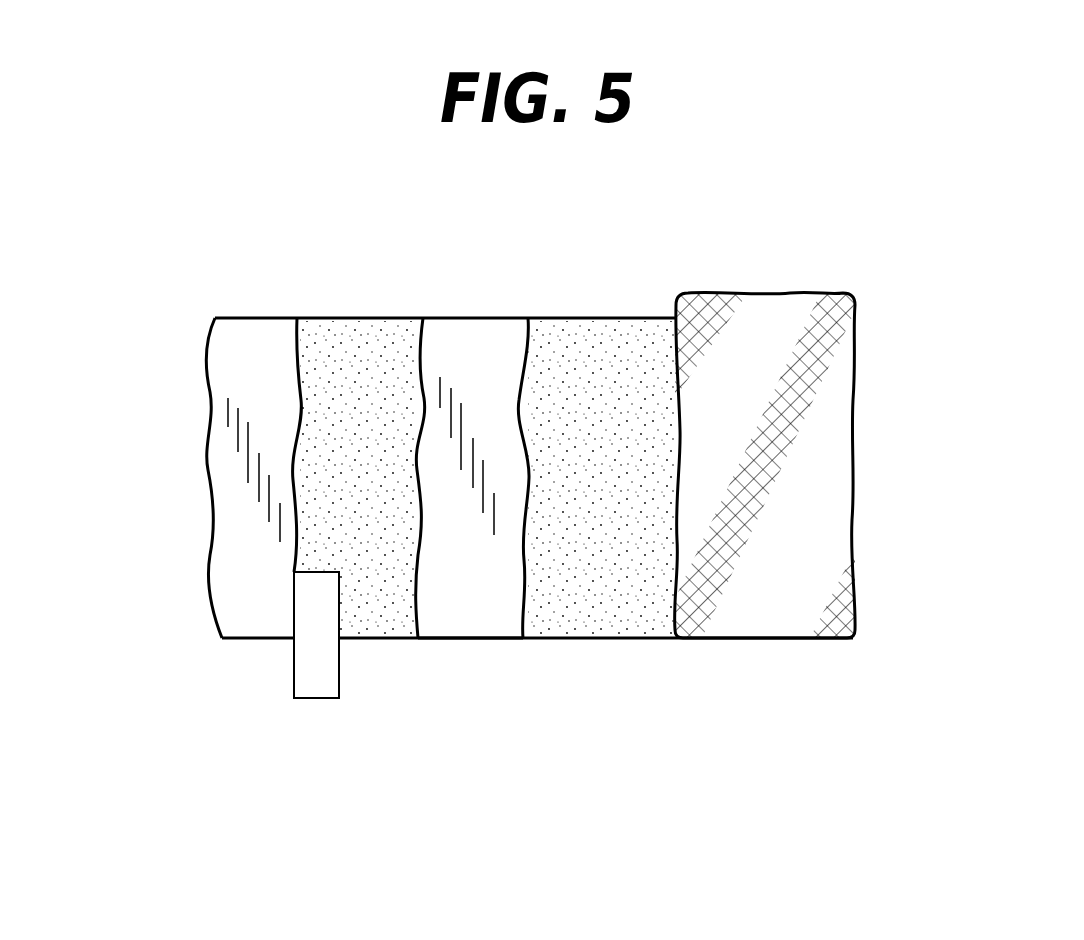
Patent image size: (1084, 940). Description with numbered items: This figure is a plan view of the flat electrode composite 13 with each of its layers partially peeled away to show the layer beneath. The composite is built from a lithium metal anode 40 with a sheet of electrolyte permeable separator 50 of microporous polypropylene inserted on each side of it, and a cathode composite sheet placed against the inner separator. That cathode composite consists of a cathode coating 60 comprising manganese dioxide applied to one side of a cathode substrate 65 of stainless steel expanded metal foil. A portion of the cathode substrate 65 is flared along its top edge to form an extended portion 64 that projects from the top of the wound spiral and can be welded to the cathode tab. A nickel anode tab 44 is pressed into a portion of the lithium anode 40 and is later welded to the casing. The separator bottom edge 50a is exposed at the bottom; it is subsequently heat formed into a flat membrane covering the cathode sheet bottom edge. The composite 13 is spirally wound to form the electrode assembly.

The electrode composite 13 is at (295, 212).
The anode 40 is at (357, 350).
The anode tab 44 is at (322, 700).
The separator 50 is at (233, 337).
The separator bottom edge 50a is at (470, 630).
The cathode coating 60 is at (593, 337).
The extended portion of cathode substrate 64 is at (822, 295).
The cathode substrate 65 is at (783, 615).